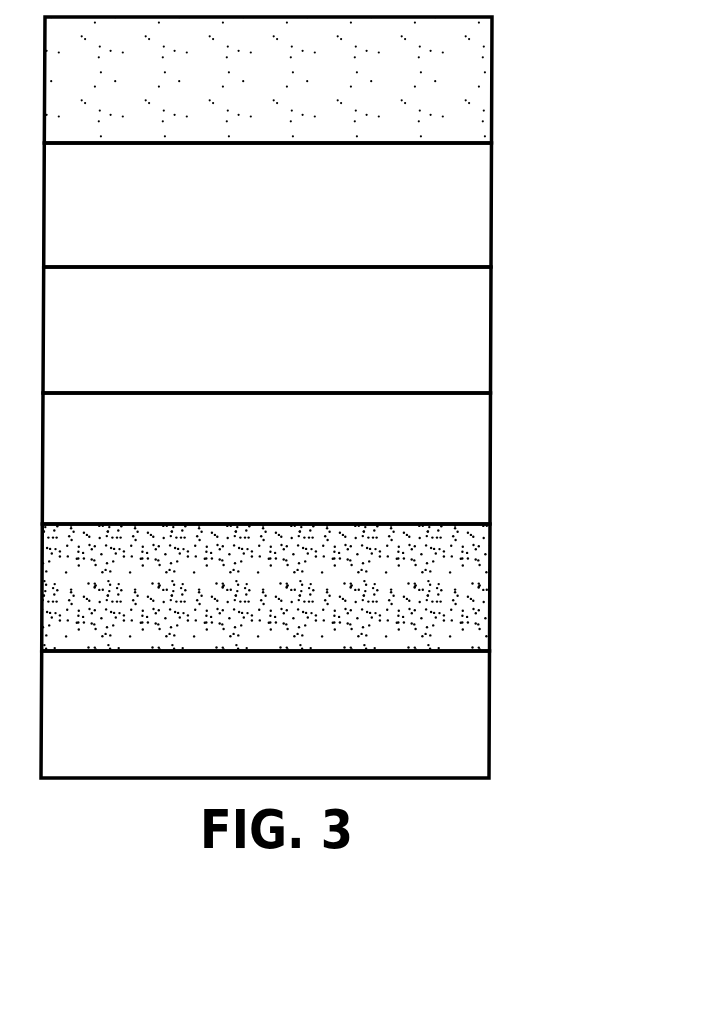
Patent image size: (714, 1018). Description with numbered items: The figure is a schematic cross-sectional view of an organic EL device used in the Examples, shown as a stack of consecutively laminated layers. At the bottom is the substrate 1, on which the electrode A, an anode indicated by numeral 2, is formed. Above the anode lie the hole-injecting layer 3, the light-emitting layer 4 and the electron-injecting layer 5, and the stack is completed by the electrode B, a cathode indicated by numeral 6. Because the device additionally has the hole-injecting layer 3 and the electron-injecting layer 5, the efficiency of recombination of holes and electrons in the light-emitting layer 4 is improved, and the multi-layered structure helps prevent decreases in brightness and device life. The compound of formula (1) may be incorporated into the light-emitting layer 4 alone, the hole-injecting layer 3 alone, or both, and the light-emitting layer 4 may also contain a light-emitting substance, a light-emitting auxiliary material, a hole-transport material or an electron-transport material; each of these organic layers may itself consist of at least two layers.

The substrate 1 is at (533, 720).
The electrode A (anode) 2 is at (534, 590).
The hole-injecting layer 3 is at (534, 462).
The light-emitting layer 4 is at (534, 333).
The electron-injecting layer 5 is at (534, 206).
The electrode B (cathode) 6 is at (533, 79).